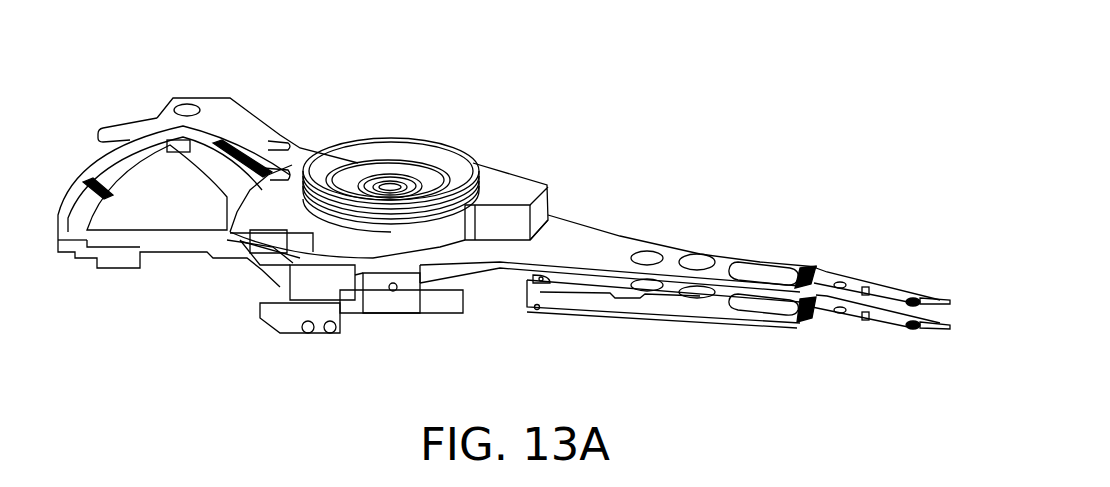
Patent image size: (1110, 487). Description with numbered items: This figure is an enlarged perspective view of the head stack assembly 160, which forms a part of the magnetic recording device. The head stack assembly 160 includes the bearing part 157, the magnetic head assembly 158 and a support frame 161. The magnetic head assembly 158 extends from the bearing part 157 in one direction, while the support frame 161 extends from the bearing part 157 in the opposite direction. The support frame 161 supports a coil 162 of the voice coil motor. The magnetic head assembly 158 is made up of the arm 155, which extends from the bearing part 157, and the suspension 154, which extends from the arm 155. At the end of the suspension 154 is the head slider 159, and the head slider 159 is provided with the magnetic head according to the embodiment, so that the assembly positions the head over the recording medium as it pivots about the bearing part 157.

The suspension 154 is at (883, 290).
The arm 155 is at (722, 262).
The bearing part 157 is at (406, 108).
The magnetic head assembly 158 is at (650, 217).
The head slider 159 is at (922, 297).
The head stack assembly 160 is at (613, 140).
The support frame 161 is at (223, 120).
The coil 162 is at (161, 220).